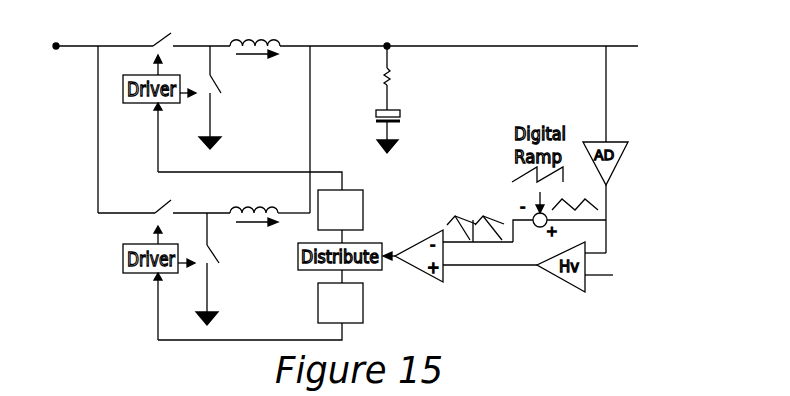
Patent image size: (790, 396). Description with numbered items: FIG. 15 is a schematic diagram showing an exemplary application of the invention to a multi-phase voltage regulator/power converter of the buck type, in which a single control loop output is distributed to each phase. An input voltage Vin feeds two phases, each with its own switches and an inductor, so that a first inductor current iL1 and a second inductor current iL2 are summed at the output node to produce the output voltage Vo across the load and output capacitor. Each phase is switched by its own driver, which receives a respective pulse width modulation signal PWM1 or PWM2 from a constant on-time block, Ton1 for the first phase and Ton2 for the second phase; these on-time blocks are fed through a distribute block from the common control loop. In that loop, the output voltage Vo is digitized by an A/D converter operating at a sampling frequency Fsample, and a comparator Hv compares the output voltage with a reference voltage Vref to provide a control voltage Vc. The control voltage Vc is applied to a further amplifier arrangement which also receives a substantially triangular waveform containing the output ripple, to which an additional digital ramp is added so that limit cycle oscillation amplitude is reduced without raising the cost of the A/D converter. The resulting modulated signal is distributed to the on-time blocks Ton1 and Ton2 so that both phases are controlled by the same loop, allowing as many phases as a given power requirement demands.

The input voltage node Vin is at (99, 34).
The first phase inductor L1 current iL1 is at (255, 33).
The second phase inductor L2 current iL2 is at (254, 202).
The first phase PWM drive signal PWM1 is at (221, 146).
The second phase PWM drive signal PWM2 is at (221, 306).
The first phase on-time generator Ton1 is at (340, 210).
The second phase on-time generator Ton2 is at (340, 303).
The output voltage node with load and output capacitor Vo is at (388, 86).
The sampling frequency Fsample is at (636, 219).
The output voltage of comparator Hv Vc is at (490, 282).
The reference voltage Vref is at (616, 287).